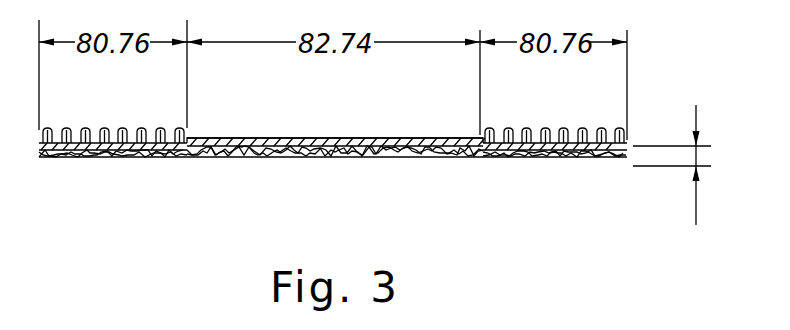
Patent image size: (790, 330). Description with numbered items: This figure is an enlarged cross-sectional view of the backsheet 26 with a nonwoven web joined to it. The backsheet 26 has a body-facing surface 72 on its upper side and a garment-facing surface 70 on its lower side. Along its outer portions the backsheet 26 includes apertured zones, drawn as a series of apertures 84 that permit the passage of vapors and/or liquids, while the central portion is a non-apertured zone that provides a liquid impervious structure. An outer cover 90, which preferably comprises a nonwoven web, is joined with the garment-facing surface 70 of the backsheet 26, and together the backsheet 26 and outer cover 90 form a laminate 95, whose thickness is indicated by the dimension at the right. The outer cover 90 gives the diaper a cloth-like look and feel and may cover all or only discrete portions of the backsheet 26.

The backsheet 26 is at (365, 139).
The garment-facing surface 70 is at (298, 157).
The body-facing surface 72 is at (277, 138).
The apertures 84 is at (86, 128).
The outer cover 90 is at (408, 157).
The laminate 95 is at (696, 205).